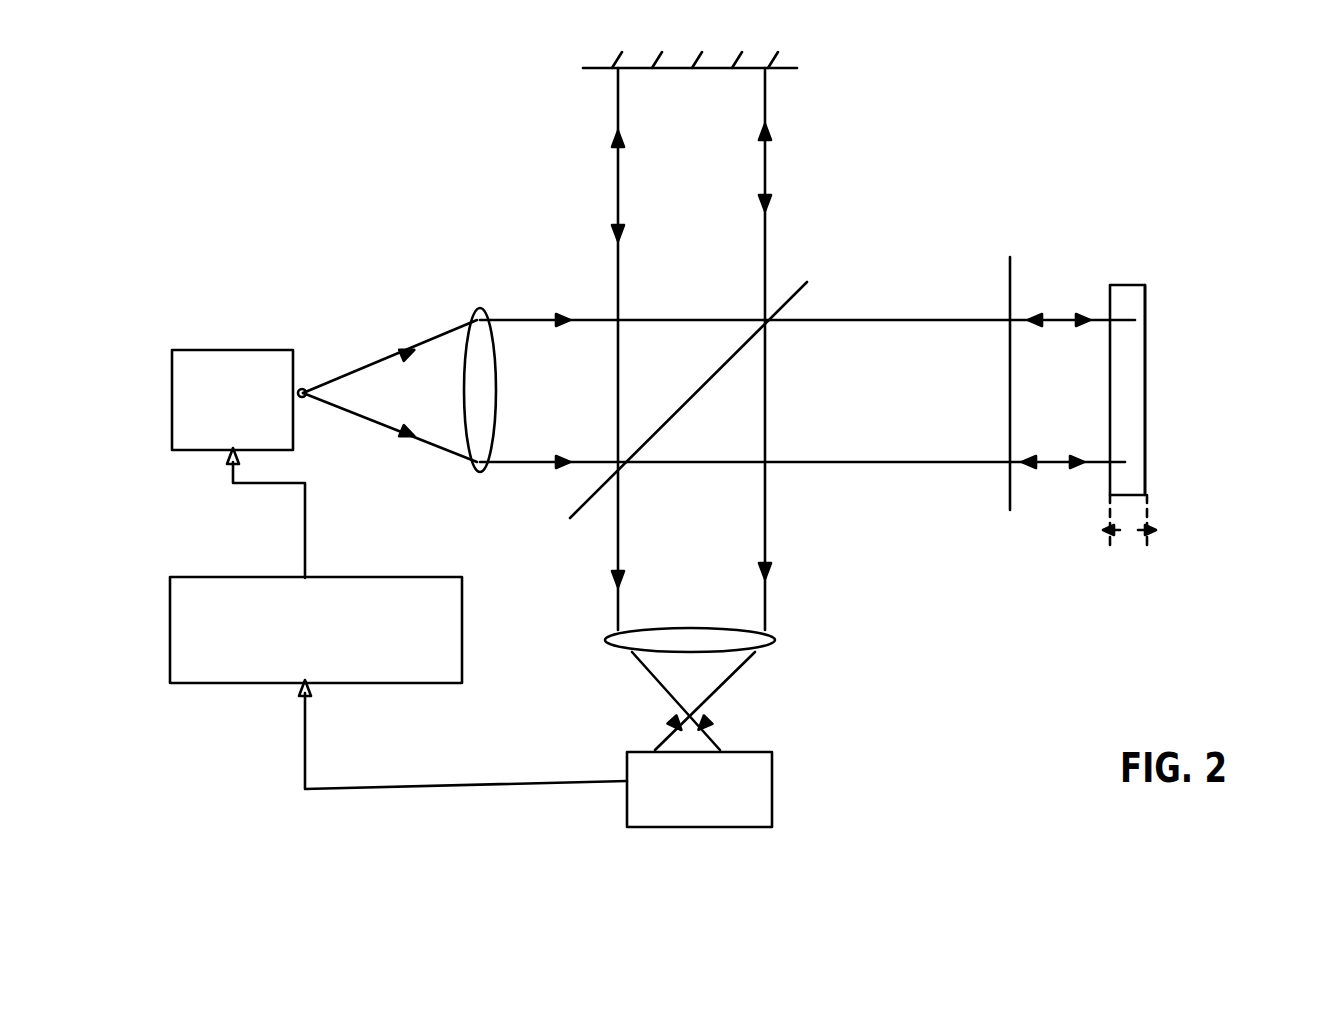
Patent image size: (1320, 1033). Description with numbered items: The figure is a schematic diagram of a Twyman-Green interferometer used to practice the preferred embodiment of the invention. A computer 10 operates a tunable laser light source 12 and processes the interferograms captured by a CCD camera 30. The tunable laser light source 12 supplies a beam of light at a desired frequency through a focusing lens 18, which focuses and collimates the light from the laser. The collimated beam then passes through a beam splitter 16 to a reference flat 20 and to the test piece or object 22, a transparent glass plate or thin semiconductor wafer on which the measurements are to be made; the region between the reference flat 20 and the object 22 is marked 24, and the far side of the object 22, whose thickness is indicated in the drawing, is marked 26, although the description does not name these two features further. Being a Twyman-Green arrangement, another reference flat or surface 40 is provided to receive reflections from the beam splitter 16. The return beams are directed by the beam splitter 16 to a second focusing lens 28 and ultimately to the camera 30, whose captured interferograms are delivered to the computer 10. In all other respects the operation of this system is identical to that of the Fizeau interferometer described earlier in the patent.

The computer 10 is at (380, 683).
The tunable laser light source 12 is at (228, 342).
The beam splitter 16 is at (787, 305).
The focusing lens 18 is at (493, 417).
The reference flat 20 is at (1010, 278).
The test piece or object 22 is at (1125, 335).
The gap between reference and sample 24 is at (1110, 394).
The second surface of sample (thickness T) 26 is at (1145, 415).
The focusing lens 28 is at (718, 643).
The CCD camera 30 is at (755, 775).
The reference flat or surface 40 is at (773, 68).